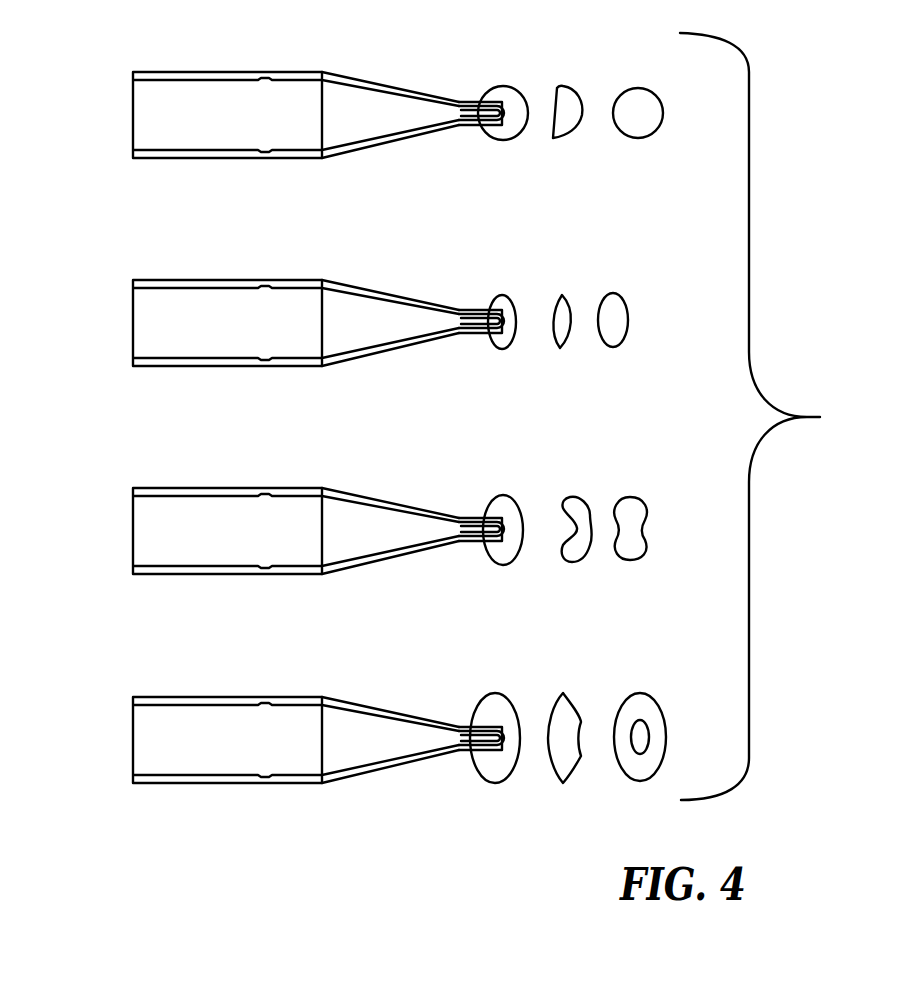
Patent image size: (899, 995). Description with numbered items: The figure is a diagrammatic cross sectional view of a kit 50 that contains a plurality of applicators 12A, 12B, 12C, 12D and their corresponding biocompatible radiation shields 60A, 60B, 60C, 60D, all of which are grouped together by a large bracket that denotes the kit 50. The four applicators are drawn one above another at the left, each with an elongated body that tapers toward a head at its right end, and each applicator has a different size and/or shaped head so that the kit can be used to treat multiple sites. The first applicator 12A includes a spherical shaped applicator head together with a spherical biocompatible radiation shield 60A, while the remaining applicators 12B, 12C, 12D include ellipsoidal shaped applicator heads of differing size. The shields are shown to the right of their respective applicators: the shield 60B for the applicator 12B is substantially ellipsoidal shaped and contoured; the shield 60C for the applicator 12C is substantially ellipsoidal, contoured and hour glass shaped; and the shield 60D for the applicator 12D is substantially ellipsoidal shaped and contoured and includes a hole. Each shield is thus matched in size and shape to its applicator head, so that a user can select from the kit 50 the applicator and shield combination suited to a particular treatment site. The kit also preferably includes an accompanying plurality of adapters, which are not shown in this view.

The applicator 12A is at (373, 157).
The applicator 12B is at (386, 358).
The applicator 12C is at (382, 567).
The applicator 12D is at (376, 704).
The shield 60A is at (568, 138).
The shield 60B is at (563, 340).
The shield 60C is at (577, 548).
The shield 60D is at (622, 702).
The kit 50 is at (781, 416).